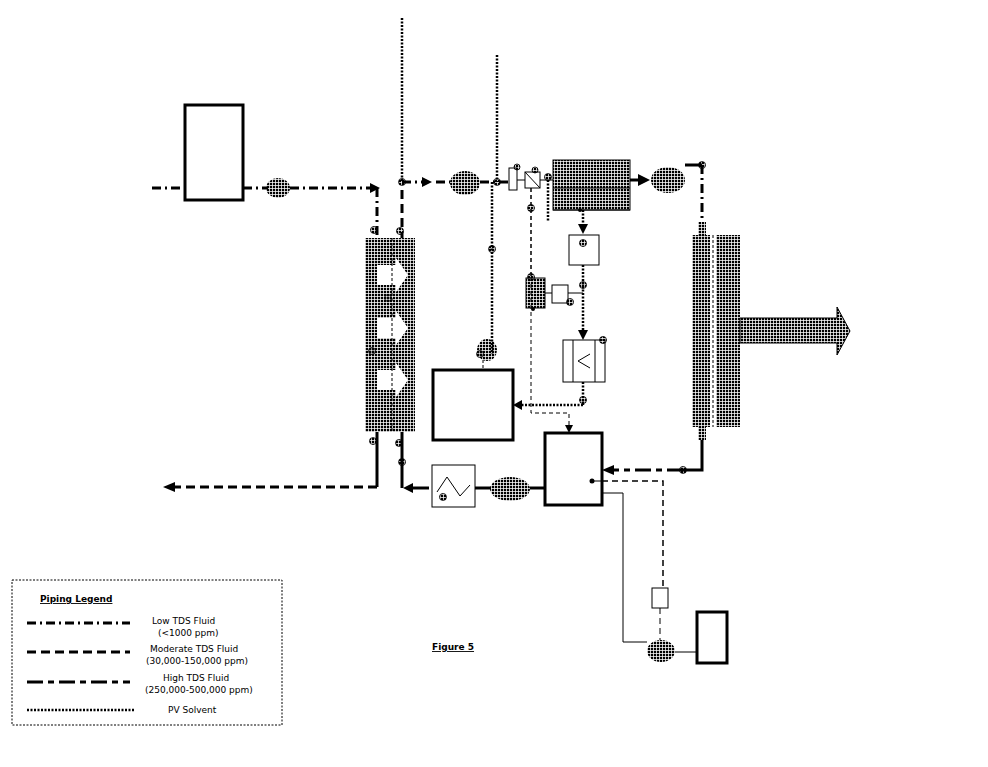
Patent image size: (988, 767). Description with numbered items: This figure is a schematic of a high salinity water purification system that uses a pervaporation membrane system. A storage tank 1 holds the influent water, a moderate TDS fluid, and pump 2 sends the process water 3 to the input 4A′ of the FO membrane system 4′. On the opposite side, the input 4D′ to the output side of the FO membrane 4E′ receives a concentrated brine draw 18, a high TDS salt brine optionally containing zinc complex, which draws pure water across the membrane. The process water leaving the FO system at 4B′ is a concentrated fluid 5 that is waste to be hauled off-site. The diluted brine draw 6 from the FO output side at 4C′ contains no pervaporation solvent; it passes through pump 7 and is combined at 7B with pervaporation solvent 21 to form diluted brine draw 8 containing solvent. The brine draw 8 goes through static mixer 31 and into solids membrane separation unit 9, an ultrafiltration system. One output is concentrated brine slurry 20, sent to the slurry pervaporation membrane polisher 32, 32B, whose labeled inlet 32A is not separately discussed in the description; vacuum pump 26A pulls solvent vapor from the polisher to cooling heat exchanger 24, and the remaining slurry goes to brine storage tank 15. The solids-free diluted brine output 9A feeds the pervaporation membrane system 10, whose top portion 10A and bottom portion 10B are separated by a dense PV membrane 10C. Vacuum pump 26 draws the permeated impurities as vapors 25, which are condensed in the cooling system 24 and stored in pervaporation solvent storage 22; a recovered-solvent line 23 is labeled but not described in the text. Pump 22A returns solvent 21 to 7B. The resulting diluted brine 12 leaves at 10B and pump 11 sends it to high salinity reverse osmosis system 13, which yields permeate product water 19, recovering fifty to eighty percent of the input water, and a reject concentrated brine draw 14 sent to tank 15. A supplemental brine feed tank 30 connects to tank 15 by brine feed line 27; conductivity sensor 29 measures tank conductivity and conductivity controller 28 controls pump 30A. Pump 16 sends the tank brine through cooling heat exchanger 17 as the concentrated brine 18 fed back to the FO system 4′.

The storage tank 1 is at (214, 152).
The pump 2 is at (277, 198).
The process water 3 is at (266, 198).
The FO membrane system 4′ is at (372, 351).
The input side input 4A′ is at (374, 230).
The FO process water output 4B′ is at (373, 441).
The output side port 4C′ is at (400, 231).
The output side input 4D′ is at (399, 443).
The FO membrane 4E′ is at (388, 298).
The concentrated process fluid 5 is at (270, 467).
The diluted brine draw 6 is at (402, 18).
The pump 7 is at (463, 176).
The mixing point 7B is at (507, 176).
The diluted brine draw containing pervaporation solvent 8 is at (497, 55).
The solids membrane separation unit 9 is at (535, 170).
The diluted brine output 9A is at (552, 209).
The pervaporation membrane system 10 is at (593, 158).
The top portion 10A is at (630, 188).
The bottom portion 10B is at (580, 211).
The dense PV membrane 10C is at (630, 199).
The pump 11 is at (669, 170).
The diluted brine 12 is at (702, 165).
The high salinity reverse osmosis system 13 is at (722, 427).
The concentrated brine draw 14 is at (683, 470).
The brine storage tank 15 is at (573, 469).
The pump 16 is at (517, 500).
The cooling heat exchanger 17 is at (443, 497).
The concentrated brine draw 18 is at (402, 462).
The permeate product water 19 is at (832, 367).
The concentrated brine slurry 20 is at (531, 208).
The pervaporation solvent 21 is at (492, 249).
The pervaporation solvent storage 22 is at (473, 405).
The pump 22A is at (480, 354).
The pervaporation solvent 23 is at (583, 400).
The cooling heat exchanger 24 is at (603, 340).
The vapors 25 is at (583, 285).
The vacuum pump 26 is at (583, 243).
The vacuum pump 26A is at (570, 302).
The brine feed line 27 is at (606, 567).
The conductivity controller 28 is at (668, 598).
The conductivity sensor 29 is at (602, 485).
The supplemental brine feed tank 30 is at (727, 647).
The pump 30A is at (650, 655).
The static mixer 31 is at (517, 167).
The slurry pervaporation membrane polisher 32 is at (526, 295).
The slurry polisher inlet 32A is at (530, 277).
The slurry pervaporation membrane polisher 32B is at (533, 310).